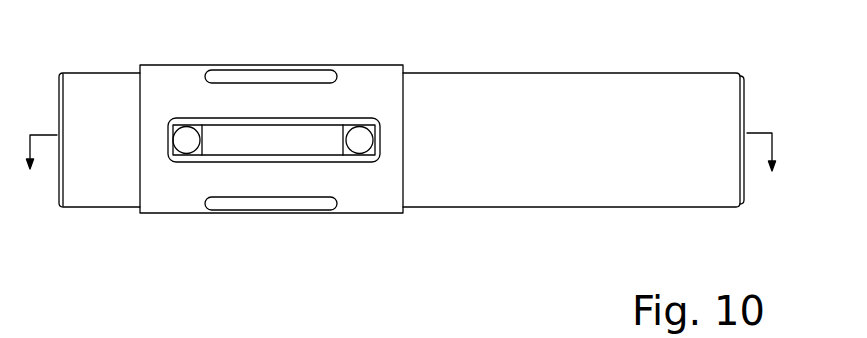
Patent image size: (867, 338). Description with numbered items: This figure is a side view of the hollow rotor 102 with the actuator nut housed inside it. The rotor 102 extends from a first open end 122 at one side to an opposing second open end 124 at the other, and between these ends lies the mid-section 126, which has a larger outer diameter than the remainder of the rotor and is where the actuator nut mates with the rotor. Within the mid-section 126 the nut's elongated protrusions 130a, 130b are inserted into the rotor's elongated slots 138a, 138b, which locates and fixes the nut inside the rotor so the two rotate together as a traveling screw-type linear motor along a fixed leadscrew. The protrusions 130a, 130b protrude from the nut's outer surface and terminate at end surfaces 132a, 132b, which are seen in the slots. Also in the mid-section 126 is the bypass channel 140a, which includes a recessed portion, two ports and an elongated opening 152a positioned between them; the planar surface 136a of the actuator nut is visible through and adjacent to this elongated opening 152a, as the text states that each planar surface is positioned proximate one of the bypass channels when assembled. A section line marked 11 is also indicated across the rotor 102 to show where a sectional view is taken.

The hollow rotor 102 is at (414, 134).
The section line 11- 11 is at (403, 168).
The first open end 122 is at (56, 173).
The second open end 124 is at (745, 118).
The mid-section 126 is at (407, 50).
The elongated protrusion 130a is at (290, 212).
The elongated protrusion 130b is at (289, 70).
The end surface 132a is at (250, 203).
The end surface 132b is at (242, 80).
The planar surface 136a is at (315, 140).
The elongated slot 138a is at (223, 191).
The elongated slot 138b is at (223, 90).
The bypass channel 140a is at (320, 171).
The elongated opening 152a is at (236, 125).